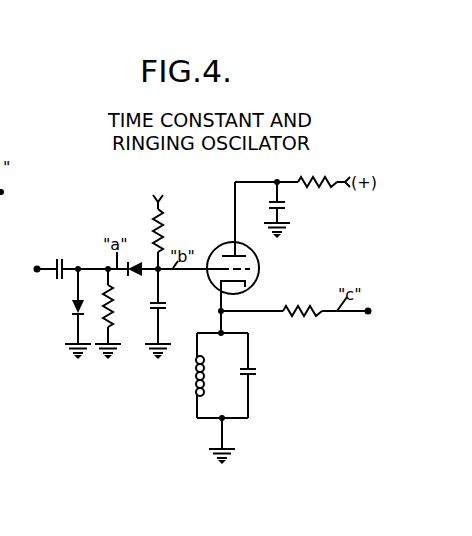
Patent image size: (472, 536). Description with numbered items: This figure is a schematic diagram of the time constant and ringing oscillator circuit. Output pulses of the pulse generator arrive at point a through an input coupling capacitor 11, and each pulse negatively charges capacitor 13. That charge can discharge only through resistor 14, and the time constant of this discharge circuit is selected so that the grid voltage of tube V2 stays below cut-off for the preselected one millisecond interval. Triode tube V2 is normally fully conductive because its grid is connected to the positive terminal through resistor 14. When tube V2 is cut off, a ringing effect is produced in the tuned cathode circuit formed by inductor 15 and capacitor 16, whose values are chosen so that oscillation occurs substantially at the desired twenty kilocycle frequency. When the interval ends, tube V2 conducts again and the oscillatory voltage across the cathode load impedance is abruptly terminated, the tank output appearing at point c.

The input coupling capacitor 11 is at (63, 258).
The capacitor 13 is at (165, 305).
The resistor 14 is at (155, 232).
The inductor 15 is at (195, 377).
The capacitor 16 is at (258, 371).
The triode tube V2 is at (230, 242).